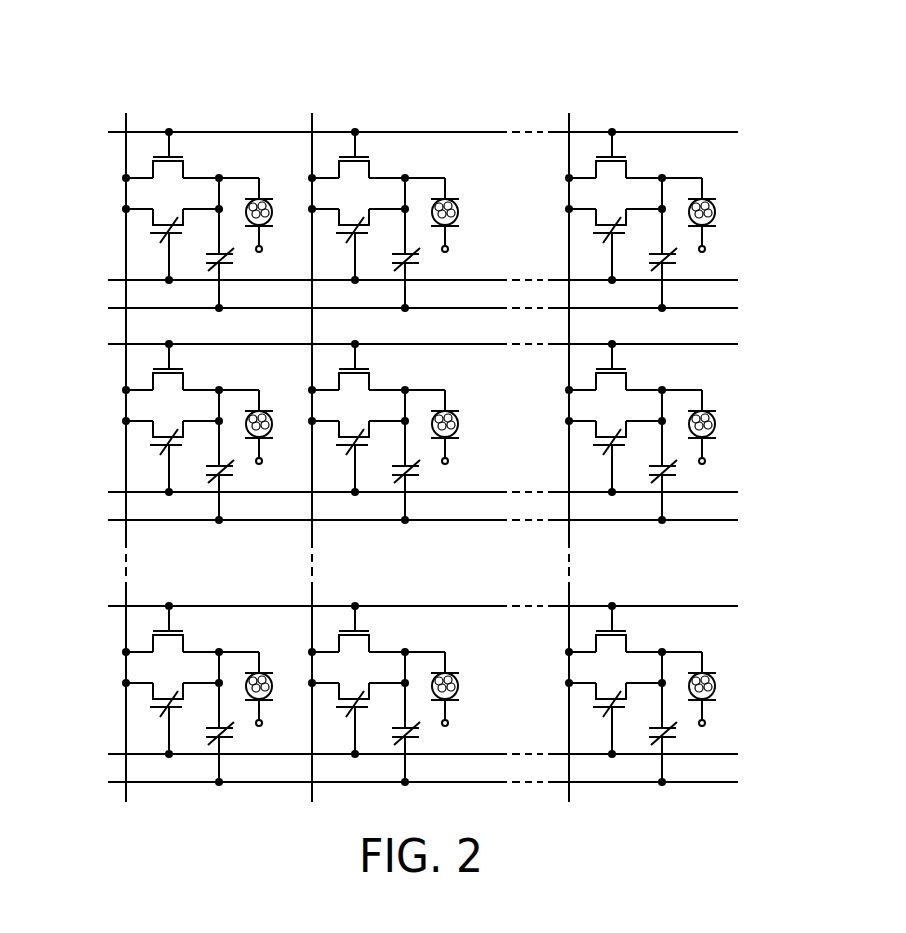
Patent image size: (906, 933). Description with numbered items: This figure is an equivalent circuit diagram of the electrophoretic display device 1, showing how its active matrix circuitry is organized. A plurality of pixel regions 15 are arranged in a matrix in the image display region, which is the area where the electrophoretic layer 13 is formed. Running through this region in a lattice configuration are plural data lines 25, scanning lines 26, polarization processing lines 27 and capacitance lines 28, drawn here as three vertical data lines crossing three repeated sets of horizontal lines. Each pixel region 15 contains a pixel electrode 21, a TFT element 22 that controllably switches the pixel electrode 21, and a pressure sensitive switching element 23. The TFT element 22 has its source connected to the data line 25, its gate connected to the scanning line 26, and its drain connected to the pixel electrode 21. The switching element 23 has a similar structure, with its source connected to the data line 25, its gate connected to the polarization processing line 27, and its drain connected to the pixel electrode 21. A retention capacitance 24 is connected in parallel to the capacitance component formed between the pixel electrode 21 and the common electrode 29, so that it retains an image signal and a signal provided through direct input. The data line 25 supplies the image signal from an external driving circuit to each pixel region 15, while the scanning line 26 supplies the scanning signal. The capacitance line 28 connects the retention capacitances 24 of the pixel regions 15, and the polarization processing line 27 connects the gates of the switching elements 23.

The electrophoretic display device 1 is at (748, 143).
The electrophoretic layer 13 is at (271, 207).
The pixel region 15 is at (302, 273).
The pixel electrode 21 is at (259, 197).
The TFT element 22 is at (190, 157).
The switching element 23 is at (152, 218).
The retention capacitance 24 is at (201, 267).
The data line 25 is at (122, 126).
The scanning line 26 is at (118, 136).
The polarization processing line 27 is at (118, 283).
The capacitance line 28 is at (118, 311).
The common electrode 29 is at (250, 229).